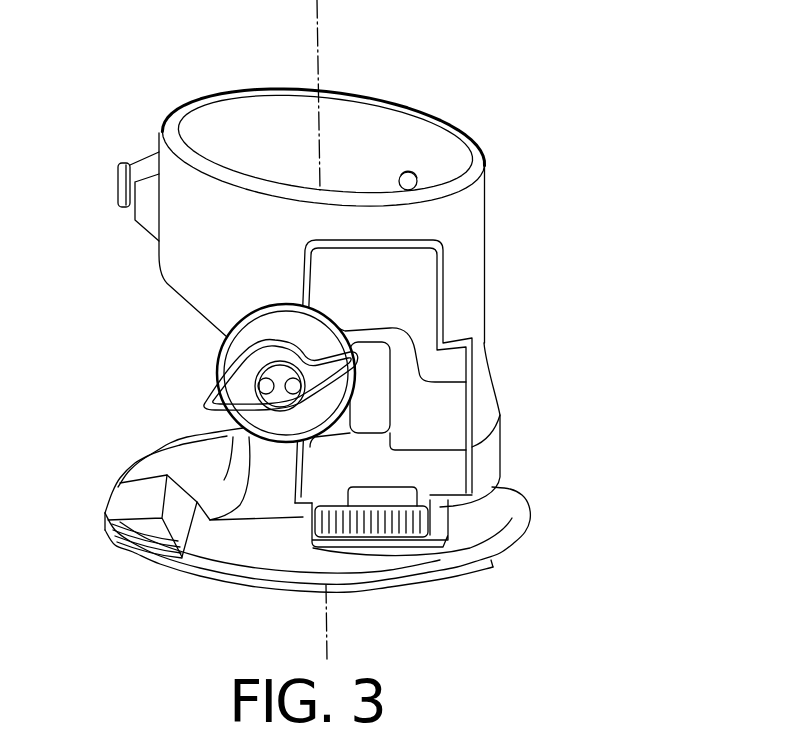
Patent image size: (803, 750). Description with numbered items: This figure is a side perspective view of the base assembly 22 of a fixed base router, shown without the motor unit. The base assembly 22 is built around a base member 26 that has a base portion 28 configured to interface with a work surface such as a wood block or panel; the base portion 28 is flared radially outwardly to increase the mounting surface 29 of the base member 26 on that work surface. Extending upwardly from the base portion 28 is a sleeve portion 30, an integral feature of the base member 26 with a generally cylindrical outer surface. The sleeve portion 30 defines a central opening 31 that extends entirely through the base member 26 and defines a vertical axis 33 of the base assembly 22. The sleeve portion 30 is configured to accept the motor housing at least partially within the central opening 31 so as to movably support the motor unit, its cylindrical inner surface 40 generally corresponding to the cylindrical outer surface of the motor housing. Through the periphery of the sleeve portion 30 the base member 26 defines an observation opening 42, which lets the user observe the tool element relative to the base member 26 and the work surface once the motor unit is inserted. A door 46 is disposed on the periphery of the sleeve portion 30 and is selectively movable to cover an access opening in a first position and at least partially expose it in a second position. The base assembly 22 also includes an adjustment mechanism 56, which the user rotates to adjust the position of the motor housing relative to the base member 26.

The base assembly 22 is at (526, 347).
The base member 26 is at (485, 254).
The base portion 28 is at (527, 494).
The mounting surface 29 is at (423, 587).
The sleeve portion 30 is at (503, 417).
The central opening 31 is at (403, 113).
The vertical axis 33 is at (318, 43).
The cylindrical inner surface 40 is at (270, 117).
The observation opening 42 is at (170, 283).
The door 46 is at (410, 305).
The adjustment mechanism 56 is at (305, 518).